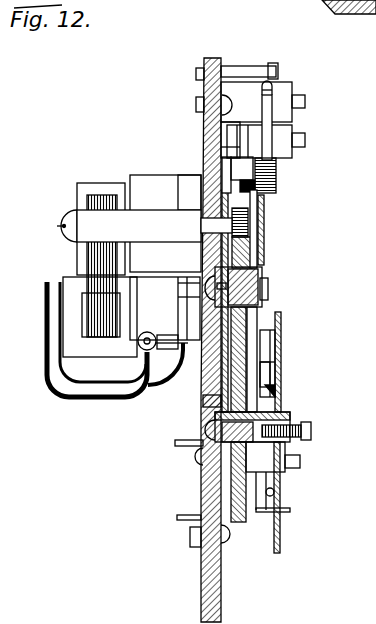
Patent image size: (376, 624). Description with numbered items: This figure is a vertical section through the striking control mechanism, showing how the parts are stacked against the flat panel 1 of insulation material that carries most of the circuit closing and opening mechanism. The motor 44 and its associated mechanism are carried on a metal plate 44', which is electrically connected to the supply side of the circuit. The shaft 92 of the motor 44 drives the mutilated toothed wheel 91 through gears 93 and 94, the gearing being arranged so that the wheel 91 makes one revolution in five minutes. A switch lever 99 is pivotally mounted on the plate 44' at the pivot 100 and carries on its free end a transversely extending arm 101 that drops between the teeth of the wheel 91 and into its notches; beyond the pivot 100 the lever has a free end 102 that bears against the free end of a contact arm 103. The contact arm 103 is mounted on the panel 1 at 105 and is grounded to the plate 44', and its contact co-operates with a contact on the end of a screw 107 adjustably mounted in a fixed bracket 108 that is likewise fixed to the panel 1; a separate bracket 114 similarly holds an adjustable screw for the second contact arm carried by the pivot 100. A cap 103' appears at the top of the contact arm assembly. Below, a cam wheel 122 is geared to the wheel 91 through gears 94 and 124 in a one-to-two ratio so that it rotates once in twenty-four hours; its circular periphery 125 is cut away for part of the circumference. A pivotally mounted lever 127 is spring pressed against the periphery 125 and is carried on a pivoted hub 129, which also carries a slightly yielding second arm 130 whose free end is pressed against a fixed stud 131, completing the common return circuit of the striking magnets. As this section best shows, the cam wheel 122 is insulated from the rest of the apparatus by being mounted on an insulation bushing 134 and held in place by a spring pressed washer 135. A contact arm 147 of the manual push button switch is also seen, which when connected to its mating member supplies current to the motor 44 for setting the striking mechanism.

The flat panel 1 is at (211, 56).
The motor 44 is at (123, 267).
The metal plate 44' is at (185, 412).
The switch lever 99 is at (203, 156).
The fixed bracket 108 is at (203, 171).
The shaft 92 is at (178, 246).
The gear 93 is at (249, 227).
The gear 94 is at (251, 250).
The mutilated toothed wheel 91 is at (266, 318).
The pivot 100 is at (280, 137).
The transversely extending arm 101 is at (257, 183).
The free end 102 is at (272, 110).
The contact arm 103 is at (303, 114).
The plunger cap bolt 103' is at (260, 56).
The mounting of contact arm 105 is at (273, 92).
The screw 107 is at (268, 173).
The bracket 114 is at (276, 163).
The fixed stud 131 is at (268, 343).
The second arm 130 is at (272, 365).
The cam wheel 122 is at (278, 377).
The insulation bushing 134 is at (277, 396).
The spring pressed washer 135 is at (286, 417).
The pivoted hub 129 is at (288, 468).
The pivotally mounted lever 127 is at (266, 500).
The circular periphery 125 is at (277, 555).
The gear 124 is at (219, 498).
The contact arm 147 is at (180, 516).